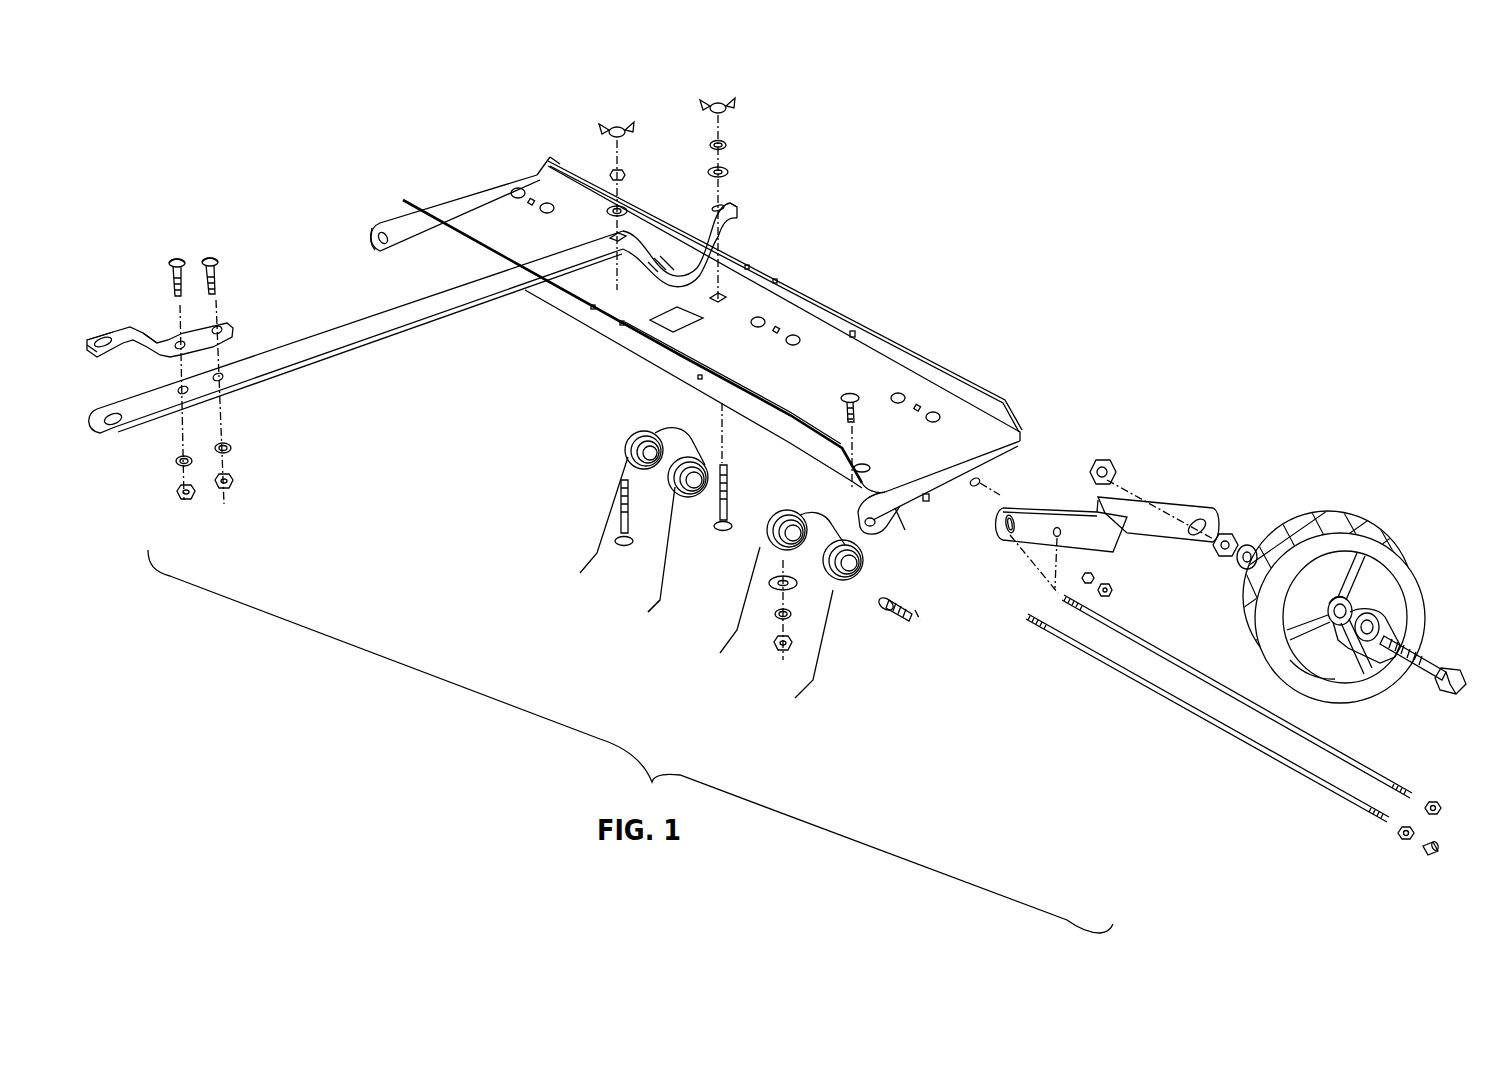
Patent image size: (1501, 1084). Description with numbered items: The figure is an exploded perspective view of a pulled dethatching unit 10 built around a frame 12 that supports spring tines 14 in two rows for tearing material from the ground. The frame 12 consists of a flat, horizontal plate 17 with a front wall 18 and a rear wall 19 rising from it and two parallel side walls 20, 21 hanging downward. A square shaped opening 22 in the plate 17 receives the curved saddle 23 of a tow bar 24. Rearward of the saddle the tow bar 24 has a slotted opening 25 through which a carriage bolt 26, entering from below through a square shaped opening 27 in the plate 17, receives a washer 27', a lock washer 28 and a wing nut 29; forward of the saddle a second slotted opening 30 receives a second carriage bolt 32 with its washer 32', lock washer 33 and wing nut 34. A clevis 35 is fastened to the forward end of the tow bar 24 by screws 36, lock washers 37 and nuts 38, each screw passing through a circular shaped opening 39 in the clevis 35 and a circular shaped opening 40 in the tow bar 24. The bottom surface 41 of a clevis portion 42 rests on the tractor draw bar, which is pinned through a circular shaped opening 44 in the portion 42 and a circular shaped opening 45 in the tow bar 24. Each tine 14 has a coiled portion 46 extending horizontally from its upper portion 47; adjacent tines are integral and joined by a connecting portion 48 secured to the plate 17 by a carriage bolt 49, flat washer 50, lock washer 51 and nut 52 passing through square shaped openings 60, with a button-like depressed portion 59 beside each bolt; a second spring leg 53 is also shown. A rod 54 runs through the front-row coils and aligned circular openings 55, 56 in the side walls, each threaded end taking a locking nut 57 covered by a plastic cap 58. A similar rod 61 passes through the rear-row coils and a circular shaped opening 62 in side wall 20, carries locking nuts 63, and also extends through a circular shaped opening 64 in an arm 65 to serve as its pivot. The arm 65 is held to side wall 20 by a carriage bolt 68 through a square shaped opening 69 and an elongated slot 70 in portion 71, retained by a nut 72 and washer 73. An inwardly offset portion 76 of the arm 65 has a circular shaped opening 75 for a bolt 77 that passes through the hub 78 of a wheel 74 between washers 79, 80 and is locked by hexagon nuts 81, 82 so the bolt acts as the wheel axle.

The pulled dethatching unit 10 is at (488, 395).
The frame 12 is at (957, 372).
The tines 14 is at (814, 689).
The plate 17 is at (756, 381).
The front wall 18 is at (458, 204).
The rear wall 19 is at (550, 160).
The side wall 20 is at (902, 532).
The side wall 21 is at (402, 244).
The square shaped opening 22 is at (686, 322).
The curved saddle 23 is at (663, 275).
The tow bar 24 is at (413, 326).
The slotted opening 25 is at (738, 208).
The carriage bolt 26 is at (726, 531).
The square shaped opening 27 is at (732, 303).
The washer 27' is at (742, 171).
The lock washer 28 is at (728, 145).
The wing nut 29 is at (728, 106).
The slotted opening 30 is at (612, 235).
The carriage bolt 32 is at (637, 523).
The washer 32' is at (644, 202).
The lock washer 33 is at (629, 173).
The wing nut 34 is at (629, 131).
The clevis 35 is at (130, 330).
The screws 36 is at (178, 256).
The lock washers 37 is at (233, 448).
The nuts 38 is at (234, 483).
The circular shaped opening 39 is at (225, 336).
The circular shaped opening 40 is at (222, 382).
The bottom surface 41 is at (140, 350).
The portion 42 is at (136, 326).
The circular shaped opening 44 is at (104, 350).
The circular shaped opening 45 is at (118, 432).
The coiled portion 46 is at (677, 500).
The upper portion 47 is at (605, 480).
The connecting portion 48 is at (686, 432).
The carriage bolt 49 is at (856, 394).
The flat washer 50 is at (790, 590).
The lock washer 51 is at (775, 618).
The nut 52 is at (777, 646).
The tine leg 53 is at (658, 607).
The rod 54 is at (1202, 720).
The circular opening 55 is at (866, 532).
The circular opening 56 is at (392, 252).
The locking nut 57 is at (1400, 840).
The plastic cap 58 is at (1440, 848).
The depressed portion 59 is at (935, 422).
The square shaped openings 60 is at (915, 410).
The rod 61 is at (1305, 718).
The circular shaped opening 62 is at (985, 484).
The locking nut 63 is at (1440, 806).
The circular shaped opening 64 is at (1060, 538).
The arm 65 is at (1126, 546).
The carriage bolt 68 is at (896, 616).
The square shaped opening 69 is at (928, 503).
The elongated slot 70 is at (1012, 535).
The portion 71 is at (1075, 505).
The nut 72 is at (1113, 592).
The washer 73 is at (1094, 580).
The wheel 74 is at (1395, 535).
The circular shaped opening 75 is at (1206, 520).
The portion 76 is at (1160, 497).
The bolt 77 is at (1430, 660).
The hub 78 is at (1348, 600).
The washer 79 is at (1350, 643).
The washer 80 is at (1250, 571).
The hexagon nut 81 is at (1222, 559).
The hexagon nut 82 is at (1106, 463).